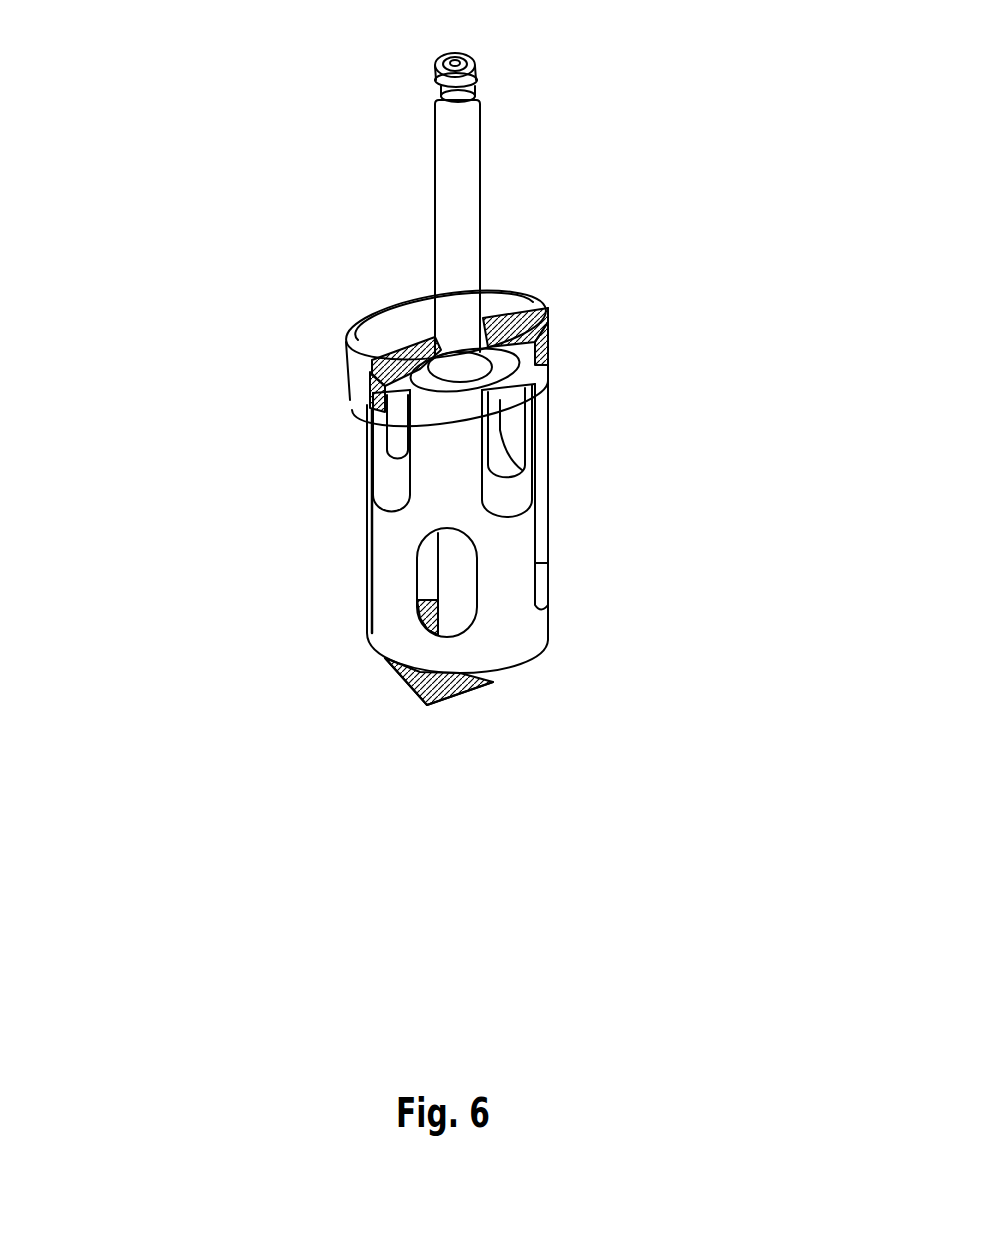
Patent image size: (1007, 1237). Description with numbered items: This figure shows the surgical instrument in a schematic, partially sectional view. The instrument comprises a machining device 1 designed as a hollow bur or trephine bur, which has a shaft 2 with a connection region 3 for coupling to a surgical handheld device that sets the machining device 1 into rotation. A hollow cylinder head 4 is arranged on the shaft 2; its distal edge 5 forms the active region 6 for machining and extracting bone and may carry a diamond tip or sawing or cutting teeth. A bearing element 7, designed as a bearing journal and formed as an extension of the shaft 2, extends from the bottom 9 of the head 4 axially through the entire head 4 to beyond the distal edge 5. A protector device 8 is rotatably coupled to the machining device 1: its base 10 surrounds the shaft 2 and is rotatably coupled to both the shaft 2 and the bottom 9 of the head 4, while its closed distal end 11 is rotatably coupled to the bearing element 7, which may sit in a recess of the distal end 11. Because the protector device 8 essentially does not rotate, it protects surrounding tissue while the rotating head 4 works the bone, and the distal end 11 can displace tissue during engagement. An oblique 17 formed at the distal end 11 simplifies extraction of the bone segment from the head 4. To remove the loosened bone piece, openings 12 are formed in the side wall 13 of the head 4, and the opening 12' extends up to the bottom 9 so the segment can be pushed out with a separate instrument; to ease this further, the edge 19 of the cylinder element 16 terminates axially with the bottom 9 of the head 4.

The machining device 1 is at (465, 172).
The shaft 2 is at (458, 157).
The connection region 3 is at (473, 88).
The hollow cylinder head 4 is at (540, 472).
The distal edge 5 is at (385, 658).
The active region 6 is at (368, 642).
The bearing element 7 is at (457, 615).
The protector device 8 is at (395, 313).
The bottom 9 is at (510, 363).
The base 10 is at (500, 297).
The distal end 11 is at (475, 688).
The opening 12 is at (375, 574).
The opening 12' is at (288, 430).
The side wall 13 is at (377, 508).
The cylinder element 16 is at (547, 352).
The oblique 17 is at (423, 678).
The edge 19 is at (352, 377).